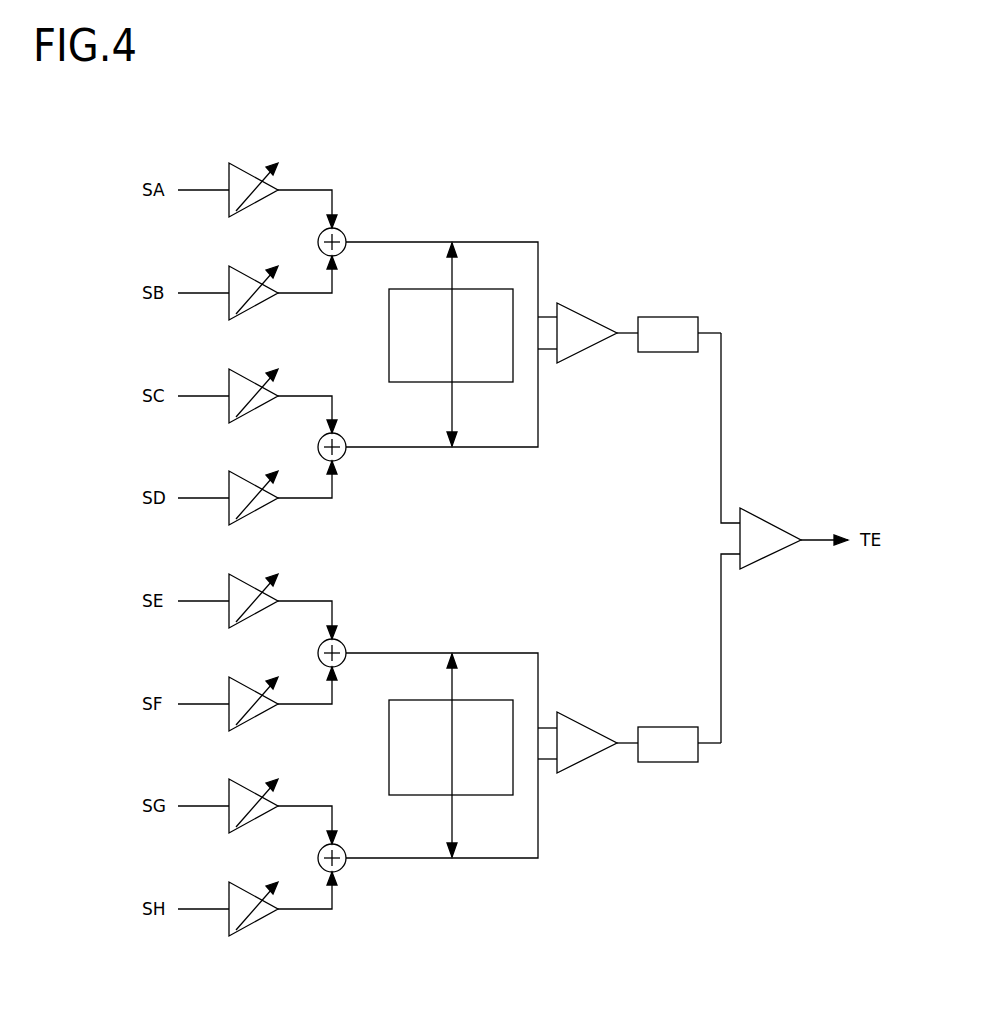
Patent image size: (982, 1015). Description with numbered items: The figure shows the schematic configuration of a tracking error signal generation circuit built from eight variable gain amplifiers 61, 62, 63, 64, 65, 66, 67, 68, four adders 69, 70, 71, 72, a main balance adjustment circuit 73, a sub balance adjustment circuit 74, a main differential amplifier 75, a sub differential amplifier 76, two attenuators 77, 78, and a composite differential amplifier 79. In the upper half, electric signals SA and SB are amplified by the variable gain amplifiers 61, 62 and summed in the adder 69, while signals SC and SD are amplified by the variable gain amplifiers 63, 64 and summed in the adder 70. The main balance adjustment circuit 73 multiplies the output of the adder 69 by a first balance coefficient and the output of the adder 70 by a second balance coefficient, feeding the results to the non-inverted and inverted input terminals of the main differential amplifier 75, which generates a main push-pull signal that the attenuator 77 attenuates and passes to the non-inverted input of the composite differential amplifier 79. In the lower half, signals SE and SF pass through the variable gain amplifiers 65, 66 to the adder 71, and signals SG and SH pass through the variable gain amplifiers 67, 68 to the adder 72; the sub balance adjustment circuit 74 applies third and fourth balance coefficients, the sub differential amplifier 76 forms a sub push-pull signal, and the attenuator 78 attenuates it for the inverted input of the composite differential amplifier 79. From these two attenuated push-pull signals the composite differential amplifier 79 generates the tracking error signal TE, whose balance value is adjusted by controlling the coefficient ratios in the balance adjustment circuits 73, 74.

The variable gain amplifier 61 is at (257, 178).
The variable gain amplifier 62 is at (257, 281).
The variable gain amplifier 63 is at (257, 384).
The variable gain amplifier 64 is at (257, 486).
The variable gain amplifier 65 is at (257, 589).
The variable gain amplifier 66 is at (257, 692).
The variable gain amplifier 67 is at (257, 794).
The variable gain amplifier 68 is at (257, 897).
The adder 69 is at (345, 232).
The adder 70 is at (345, 437).
The adder 71 is at (345, 643).
The adder 72 is at (345, 848).
The main balance adjustment circuit 73 is at (487, 291).
The sub balance adjustment circuit 74 is at (487, 702).
The main differential amplifier 75 is at (592, 311).
The sub differential amplifier 76 is at (592, 721).
The attenuator 77 is at (673, 315).
The attenuator 78 is at (673, 725).
The composite differential amplifier 79 is at (779, 519).